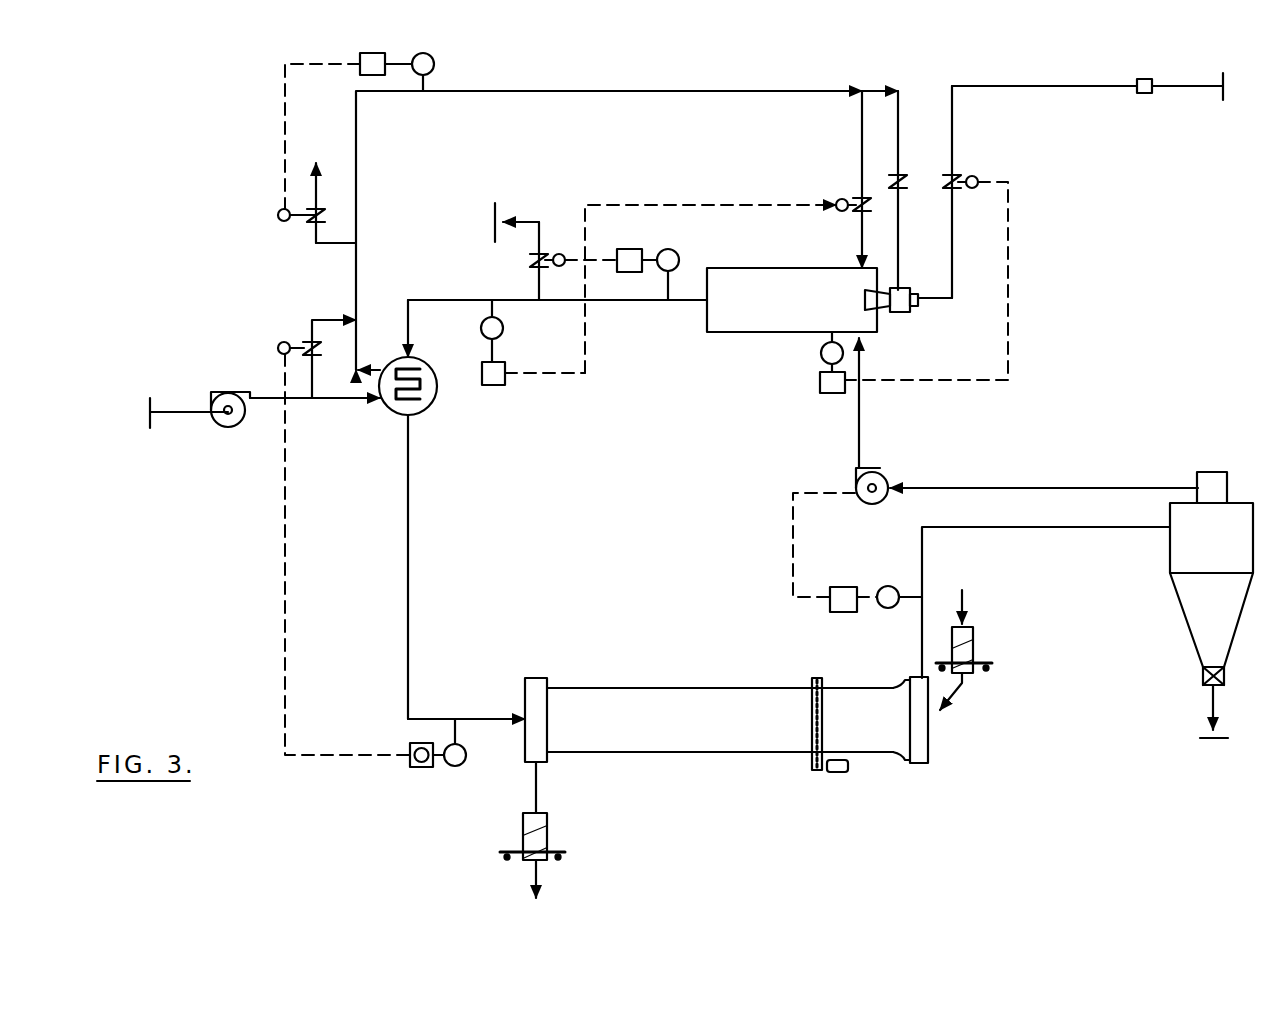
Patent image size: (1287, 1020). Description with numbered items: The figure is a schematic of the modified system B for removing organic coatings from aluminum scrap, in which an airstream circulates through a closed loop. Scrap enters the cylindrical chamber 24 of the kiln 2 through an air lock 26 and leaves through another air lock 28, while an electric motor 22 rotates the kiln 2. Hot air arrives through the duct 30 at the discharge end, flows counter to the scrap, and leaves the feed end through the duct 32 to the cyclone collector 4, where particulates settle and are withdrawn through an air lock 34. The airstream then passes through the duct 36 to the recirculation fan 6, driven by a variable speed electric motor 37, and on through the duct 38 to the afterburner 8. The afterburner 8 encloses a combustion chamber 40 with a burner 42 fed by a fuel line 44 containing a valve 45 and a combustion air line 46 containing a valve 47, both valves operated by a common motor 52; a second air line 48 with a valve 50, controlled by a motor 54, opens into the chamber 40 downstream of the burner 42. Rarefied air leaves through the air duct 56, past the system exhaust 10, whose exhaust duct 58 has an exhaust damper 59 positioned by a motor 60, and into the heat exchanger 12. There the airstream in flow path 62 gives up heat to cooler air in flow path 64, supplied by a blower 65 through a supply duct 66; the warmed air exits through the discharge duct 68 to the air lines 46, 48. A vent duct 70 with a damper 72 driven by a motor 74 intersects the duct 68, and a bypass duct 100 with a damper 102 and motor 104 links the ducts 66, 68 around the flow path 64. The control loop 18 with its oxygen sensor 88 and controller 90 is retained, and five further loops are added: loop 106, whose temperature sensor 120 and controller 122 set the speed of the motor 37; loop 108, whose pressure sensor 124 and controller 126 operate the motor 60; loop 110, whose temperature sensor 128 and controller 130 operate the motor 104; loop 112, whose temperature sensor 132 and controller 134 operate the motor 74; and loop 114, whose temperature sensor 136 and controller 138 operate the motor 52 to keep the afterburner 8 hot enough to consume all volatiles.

The kiln 2 is at (726, 748).
The cyclone collector 4 is at (1180, 610).
The recirculation fan 6 is at (853, 472).
The afterburner 8 is at (770, 337).
The system exhaust 10 is at (530, 262).
The heat exchanger 12 is at (401, 398).
The control loop 18 is at (576, 384).
The electric motor 22 is at (838, 774).
The cylindrical chamber 24 is at (727, 754).
The air lock 26 is at (975, 646).
The air lock 28 is at (522, 856).
The duct 30 is at (412, 565).
The duct 32 is at (1030, 528).
The air lock 34 is at (1200, 680).
The duct 36 is at (1038, 486).
The variable speed electric motor 37 is at (880, 481).
The duct 38 is at (862, 416).
The combustion chamber 40 is at (762, 268).
The burner 42 is at (894, 316).
The fuel line 44 is at (1084, 88).
The valve 45 is at (958, 192).
The combustion air line 46 is at (903, 125).
The valve 47 is at (904, 192).
The air line 48 is at (860, 115).
The valve 50 is at (848, 218).
The motor 52 is at (976, 178).
The motor 54 is at (838, 200).
The air duct 56 is at (642, 305).
The exhaust duct 58 is at (526, 220).
The exhaust damper 59 is at (556, 252).
The motor 60 is at (568, 252).
The flow path 62 is at (424, 414).
The flow path 64 is at (416, 372).
The blower 65 is at (222, 432).
The supply duct 66 is at (322, 420).
The discharge duct 68 is at (606, 92).
The vent duct 70 is at (322, 246).
The damper 72 is at (322, 206).
The motor 74 is at (278, 216).
The oxygen sensor 88 is at (503, 328).
The controller 90 is at (496, 386).
The bypass duct 100 is at (307, 318).
The damper 102 is at (304, 344).
The motor 104 is at (278, 349).
The control loop 106 is at (785, 558).
The control loop 108 is at (655, 212).
The control loop 110 is at (312, 782).
The control loop 112 is at (262, 150).
The control loop 114 is at (1018, 276).
The temperature sensor 120 is at (884, 609).
The controller 122 is at (838, 587).
The pressure sensor 124 is at (678, 254).
The controller 126 is at (626, 250).
The temperature sensor 128 is at (458, 768).
The controller 130 is at (420, 770).
The temperature sensor 132 is at (436, 61).
The controller 134 is at (362, 54).
The temperature sensor 136 is at (820, 354).
The controller 138 is at (824, 395).
The modified system B is at (1122, 350).